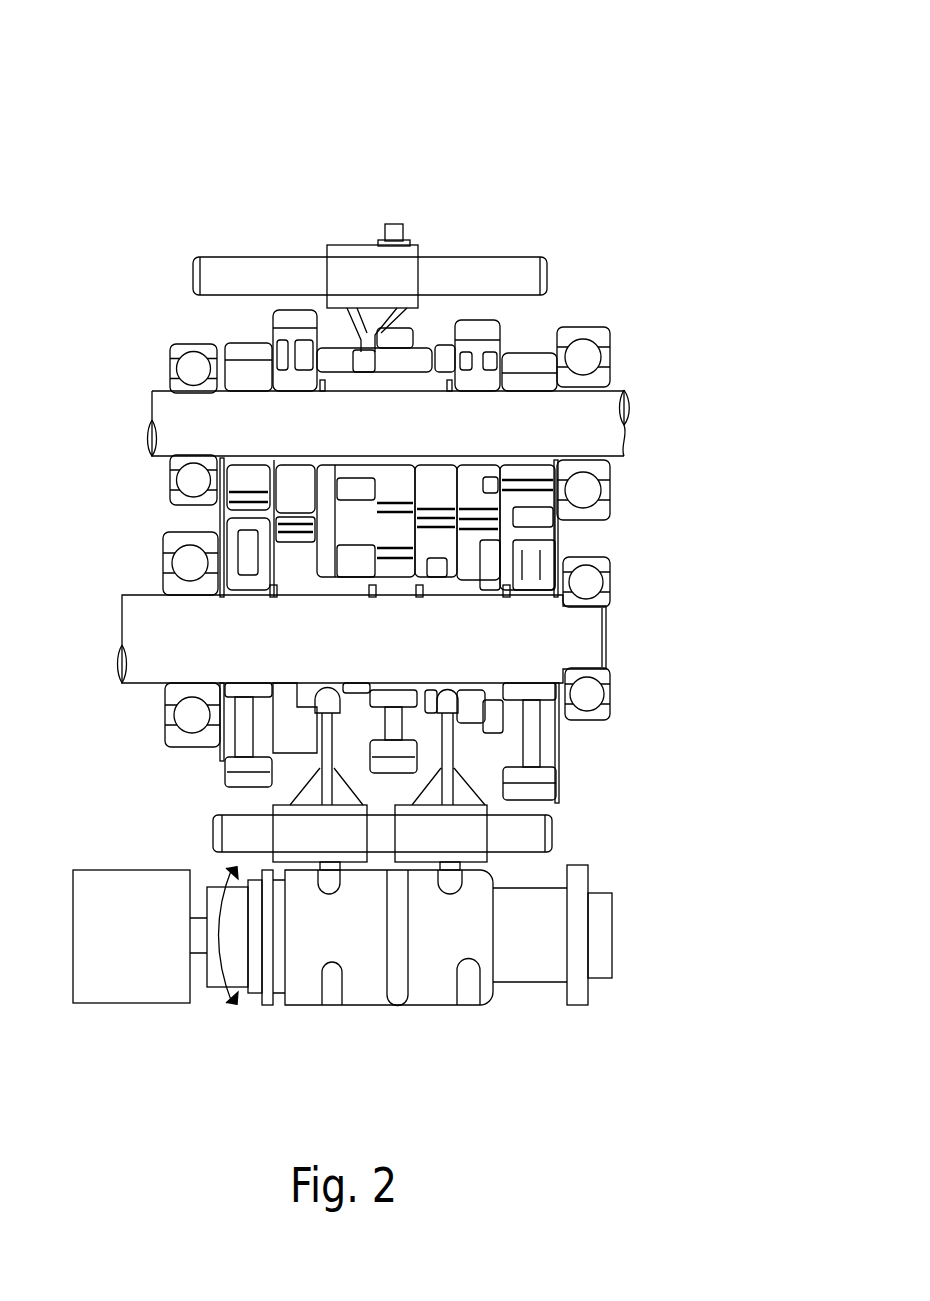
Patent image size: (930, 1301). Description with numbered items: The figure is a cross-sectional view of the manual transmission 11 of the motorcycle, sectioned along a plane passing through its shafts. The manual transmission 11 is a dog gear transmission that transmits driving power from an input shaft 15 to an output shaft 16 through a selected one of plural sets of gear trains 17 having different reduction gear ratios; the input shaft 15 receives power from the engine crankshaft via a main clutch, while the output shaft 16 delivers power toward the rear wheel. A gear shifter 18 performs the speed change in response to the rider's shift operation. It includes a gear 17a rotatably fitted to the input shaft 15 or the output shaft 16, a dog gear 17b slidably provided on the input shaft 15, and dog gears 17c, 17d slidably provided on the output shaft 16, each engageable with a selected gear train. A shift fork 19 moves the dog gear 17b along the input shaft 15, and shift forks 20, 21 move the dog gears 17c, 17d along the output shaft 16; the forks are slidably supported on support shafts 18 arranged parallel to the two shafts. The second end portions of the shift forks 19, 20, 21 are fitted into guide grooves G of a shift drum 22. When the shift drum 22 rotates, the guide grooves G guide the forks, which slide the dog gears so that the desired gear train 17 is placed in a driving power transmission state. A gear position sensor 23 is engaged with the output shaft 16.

The manual transmission 11 is at (186, 158).
The input shaft 15 is at (165, 413).
The output shaft 16 is at (140, 635).
The gear trains 17 is at (197, 331).
The gear 17a is at (502, 325).
The dog gear 17b is at (403, 338).
The dog gear 17c is at (490, 737).
The dog gear 17d is at (288, 727).
The gear shifter 18 is at (548, 272).
The shift fork 19 is at (358, 262).
The shift fork 20 is at (470, 835).
The shift fork 21 is at (307, 840).
The shift drum 22 is at (490, 1005).
The gear position sensor 23 is at (133, 1005).
The guide grooves G is at (462, 1005).